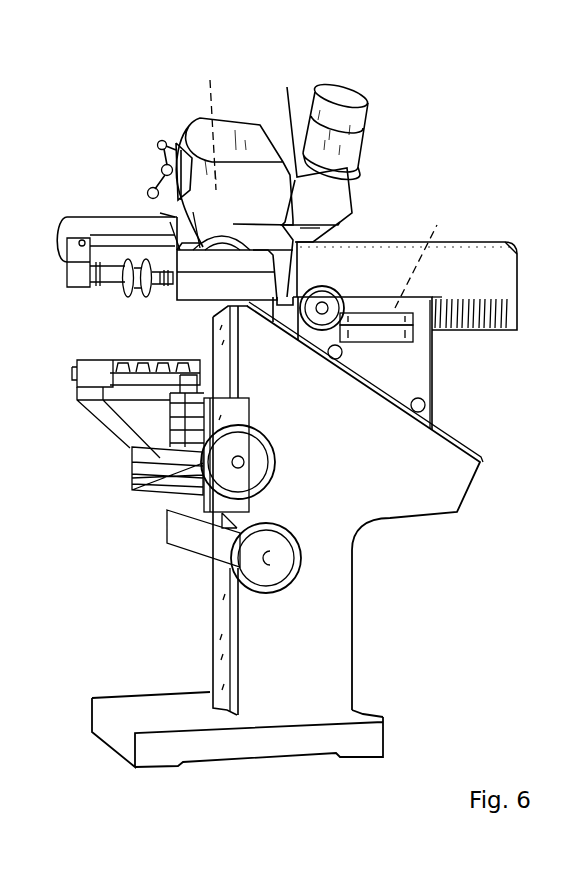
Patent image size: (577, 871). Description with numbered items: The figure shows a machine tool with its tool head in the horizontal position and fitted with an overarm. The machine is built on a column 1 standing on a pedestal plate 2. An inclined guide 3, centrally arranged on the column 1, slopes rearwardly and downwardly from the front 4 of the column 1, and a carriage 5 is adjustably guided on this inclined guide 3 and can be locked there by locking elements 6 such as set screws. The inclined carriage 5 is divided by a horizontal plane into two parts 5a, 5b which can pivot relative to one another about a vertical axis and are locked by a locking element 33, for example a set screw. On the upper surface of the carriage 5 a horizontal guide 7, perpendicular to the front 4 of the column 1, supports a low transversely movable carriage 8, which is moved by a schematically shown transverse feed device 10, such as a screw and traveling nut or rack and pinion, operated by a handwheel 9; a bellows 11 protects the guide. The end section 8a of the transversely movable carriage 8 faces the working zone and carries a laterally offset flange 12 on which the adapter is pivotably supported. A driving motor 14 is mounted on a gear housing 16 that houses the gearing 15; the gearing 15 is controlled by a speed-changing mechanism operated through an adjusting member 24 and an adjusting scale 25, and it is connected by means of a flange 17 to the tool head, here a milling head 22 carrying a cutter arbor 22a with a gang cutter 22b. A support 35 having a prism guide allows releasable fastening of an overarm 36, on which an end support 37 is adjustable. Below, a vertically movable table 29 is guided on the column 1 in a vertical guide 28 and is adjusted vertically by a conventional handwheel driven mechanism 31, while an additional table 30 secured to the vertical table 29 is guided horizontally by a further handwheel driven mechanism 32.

The column 1 is at (350, 610).
The pedestal plate 2 is at (363, 712).
The inclined guide 3 is at (477, 452).
The front of the column 4 is at (215, 678).
The carriage 5 is at (462, 373).
The carriage part 5a is at (423, 315).
The carriage part 5b is at (418, 385).
The locking elements 6 is at (425, 410).
The horizontal guide 7 is at (433, 297).
The transversely movable carriage 8 is at (493, 240).
The section of the transversely movable carriage 8a is at (320, 227).
The handwheel 9 is at (340, 288).
The transverse feed device 10 is at (426, 255).
The bellows 11 is at (480, 330).
The flange 12 is at (287, 87).
The driving motor 14 is at (343, 95).
The gearing 15 is at (206, 123).
The gear housing 16 is at (238, 125).
The flange 17 is at (152, 215).
The milling head 22 is at (200, 290).
The cutter arbor 22a is at (110, 282).
The gang cutter 22b is at (128, 292).
The adjusting member 24 is at (157, 145).
The adjusting scale 25 is at (173, 150).
The vertical guide 28 is at (237, 642).
The vertically movable table 29 is at (152, 490).
The additional table 30 is at (128, 403).
The handwheel driven mechanism 31 is at (243, 562).
The handwheel driven mechanism 32 is at (128, 490).
The locking element 33 is at (372, 310).
The support 35 is at (147, 200).
The overarm 36 is at (82, 217).
The end support 37 is at (78, 284).